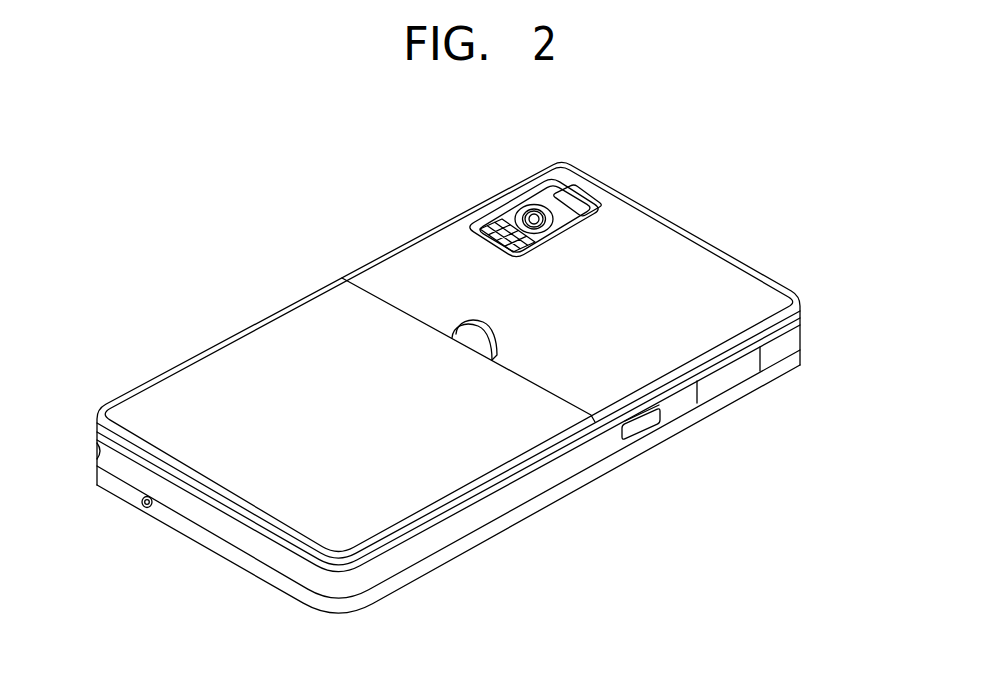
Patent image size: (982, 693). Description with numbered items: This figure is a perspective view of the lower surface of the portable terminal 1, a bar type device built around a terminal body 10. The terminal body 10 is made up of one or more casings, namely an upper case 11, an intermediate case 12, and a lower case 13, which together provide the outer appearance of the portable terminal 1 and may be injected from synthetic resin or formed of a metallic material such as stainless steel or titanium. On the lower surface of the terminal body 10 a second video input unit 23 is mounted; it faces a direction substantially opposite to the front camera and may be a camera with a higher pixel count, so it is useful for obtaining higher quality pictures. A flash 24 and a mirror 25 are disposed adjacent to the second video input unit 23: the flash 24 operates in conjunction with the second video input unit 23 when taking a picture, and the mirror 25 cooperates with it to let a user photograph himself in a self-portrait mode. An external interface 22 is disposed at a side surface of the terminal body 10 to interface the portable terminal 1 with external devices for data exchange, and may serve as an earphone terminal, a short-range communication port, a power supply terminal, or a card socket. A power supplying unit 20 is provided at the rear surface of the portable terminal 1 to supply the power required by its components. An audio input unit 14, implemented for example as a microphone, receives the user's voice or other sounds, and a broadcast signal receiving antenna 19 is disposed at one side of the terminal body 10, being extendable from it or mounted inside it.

The portable terminal 1 is at (323, 265).
The terminal body 10 is at (862, 305).
The upper case 11 is at (800, 358).
The intermediate case 12 is at (800, 335).
The lower case 13 is at (800, 313).
The audio input unit 14 is at (143, 507).
The broadcast signal receiving antenna 19 is at (97, 450).
The power supplying unit 20 is at (270, 335).
The external interface 22 is at (723, 378).
The second video input unit 23 is at (532, 216).
The flash 24 is at (490, 228).
The mirror 25 is at (560, 193).